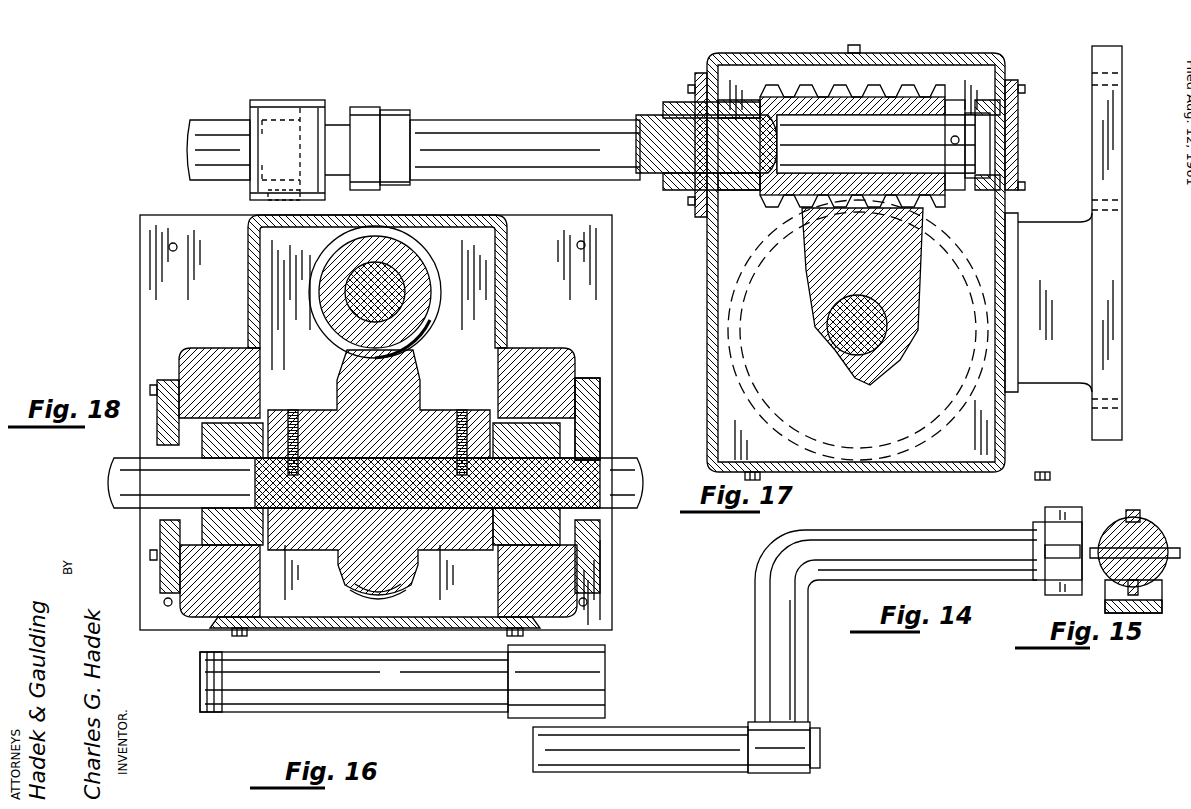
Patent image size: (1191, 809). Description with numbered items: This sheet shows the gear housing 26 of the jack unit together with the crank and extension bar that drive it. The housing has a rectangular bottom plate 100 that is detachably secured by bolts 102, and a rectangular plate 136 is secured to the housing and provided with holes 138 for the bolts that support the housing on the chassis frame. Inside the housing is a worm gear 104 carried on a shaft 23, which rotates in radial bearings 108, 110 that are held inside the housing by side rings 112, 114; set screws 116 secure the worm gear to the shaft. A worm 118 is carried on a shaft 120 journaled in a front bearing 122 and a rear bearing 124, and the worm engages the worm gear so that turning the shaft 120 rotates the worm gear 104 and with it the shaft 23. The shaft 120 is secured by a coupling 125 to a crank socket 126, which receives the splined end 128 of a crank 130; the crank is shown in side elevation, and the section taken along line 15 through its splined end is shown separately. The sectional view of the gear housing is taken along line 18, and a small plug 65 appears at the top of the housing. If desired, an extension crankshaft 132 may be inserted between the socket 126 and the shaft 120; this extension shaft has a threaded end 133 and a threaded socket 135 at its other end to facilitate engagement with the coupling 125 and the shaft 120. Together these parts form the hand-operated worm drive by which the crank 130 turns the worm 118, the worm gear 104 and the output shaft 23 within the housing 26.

In FIG. 14, the section line of FIG. 15 is at (1045, 491).
In FIG. 17, the section line of FIG. 18 is at (860, 35).
In FIG. 18, the shaft 23 is at (135, 496).
In FIG. 17, the shaft 23 is at (888, 352).
In FIG. 18, the gear housing 26 is at (506, 226).
In FIG. 17, the gear housing 26 is at (694, 305).
In FIG. 17, the vent plug 65 is at (848, 50).
In FIG. 17, the bottom plate 100 is at (985, 472).
In FIG. 18, the bolts 102 is at (232, 633).
In FIG. 17, the bolts 102 is at (1045, 476).
In FIG. 18, the worm gear 104 is at (330, 540).
In FIG. 17, the worm gear 104 is at (825, 262).
In FIG. 18, the radial bearing 108 is at (200, 438).
In FIG. 18, the radial bearing 110 is at (525, 440).
In FIG. 18, the side ring 112 is at (168, 383).
In FIG. 18, the side ring 114 is at (600, 396).
In FIG. 18, the set screws 116 is at (292, 420).
In FIG. 18, the worm 118 is at (415, 270).
In FIG. 17, the worm 118 is at (935, 95).
In FIG. 18, the shaft 120 is at (380, 290).
In FIG. 17, the shaft 120 is at (545, 135).
In FIG. 17, the front bearing 122 is at (680, 190).
In FIG. 17, the rear bearing 124 is at (400, 135).
In FIG. 17, the coupling 125 is at (330, 130).
In FIG. 17, the crank socket 126 is at (275, 140).
In FIG. 17, the splined end 128 is at (305, 198).
In FIG. 14, the splined end 128 is at (1045, 540).
In FIG. 15, the splined end 128 is at (1118, 522).
In FIG. 17, the crank 130 is at (215, 145).
In FIG. 14, the crank 130 is at (955, 545).
In FIG. 15, the crank 130 is at (1128, 594).
In FIG. 16, the extension crankshaft 132 is at (393, 675).
In FIG. 16, the threaded end 133 is at (210, 700).
In FIG. 16, the threaded socket 135 is at (573, 672).
In FIG. 18, the rectangular plate 136 is at (212, 240).
In FIG. 17, the rectangular plate 136 is at (1092, 176).
In FIG. 18, the holes 138 is at (169, 248).
In FIG. 17, the holes 138 is at (1092, 64).